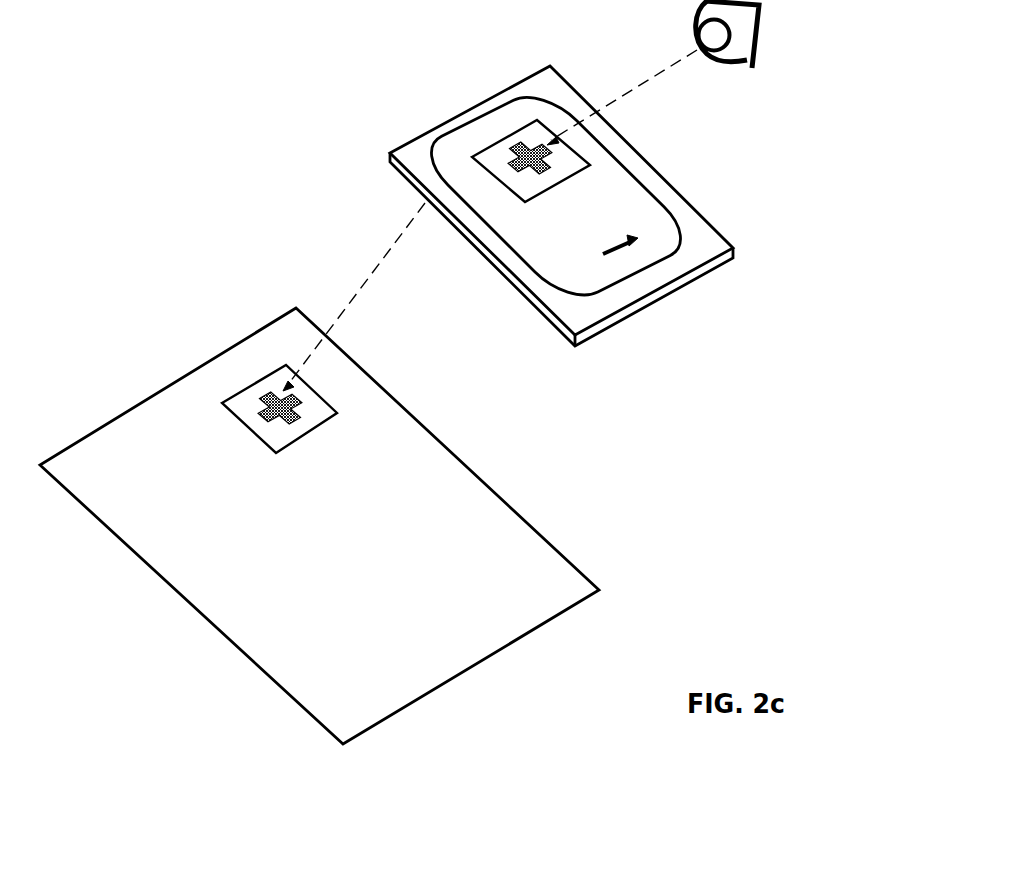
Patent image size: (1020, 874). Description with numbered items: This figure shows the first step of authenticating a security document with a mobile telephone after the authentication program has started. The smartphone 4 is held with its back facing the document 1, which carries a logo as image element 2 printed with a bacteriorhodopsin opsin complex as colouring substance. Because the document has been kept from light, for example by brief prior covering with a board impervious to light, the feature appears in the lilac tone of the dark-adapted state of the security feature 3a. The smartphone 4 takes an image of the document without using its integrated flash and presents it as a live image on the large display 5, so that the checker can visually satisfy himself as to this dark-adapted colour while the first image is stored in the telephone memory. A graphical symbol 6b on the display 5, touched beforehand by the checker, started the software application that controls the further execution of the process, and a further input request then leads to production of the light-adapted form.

The document 1 is at (267, 348).
The image element 2 is at (533, 128).
The dark-adapted state of the security feature 3a is at (548, 145).
The smartphone 4 is at (710, 252).
The display 5 is at (598, 200).
The graphical symbol 6b is at (634, 240).